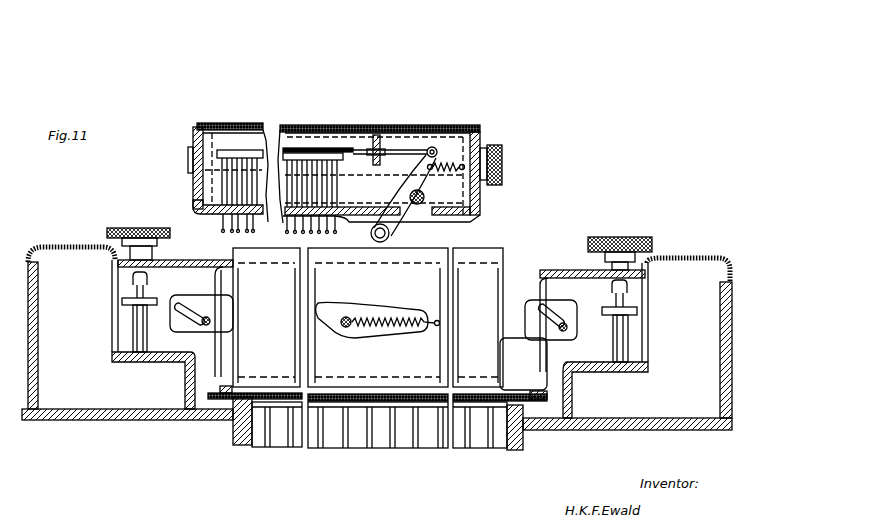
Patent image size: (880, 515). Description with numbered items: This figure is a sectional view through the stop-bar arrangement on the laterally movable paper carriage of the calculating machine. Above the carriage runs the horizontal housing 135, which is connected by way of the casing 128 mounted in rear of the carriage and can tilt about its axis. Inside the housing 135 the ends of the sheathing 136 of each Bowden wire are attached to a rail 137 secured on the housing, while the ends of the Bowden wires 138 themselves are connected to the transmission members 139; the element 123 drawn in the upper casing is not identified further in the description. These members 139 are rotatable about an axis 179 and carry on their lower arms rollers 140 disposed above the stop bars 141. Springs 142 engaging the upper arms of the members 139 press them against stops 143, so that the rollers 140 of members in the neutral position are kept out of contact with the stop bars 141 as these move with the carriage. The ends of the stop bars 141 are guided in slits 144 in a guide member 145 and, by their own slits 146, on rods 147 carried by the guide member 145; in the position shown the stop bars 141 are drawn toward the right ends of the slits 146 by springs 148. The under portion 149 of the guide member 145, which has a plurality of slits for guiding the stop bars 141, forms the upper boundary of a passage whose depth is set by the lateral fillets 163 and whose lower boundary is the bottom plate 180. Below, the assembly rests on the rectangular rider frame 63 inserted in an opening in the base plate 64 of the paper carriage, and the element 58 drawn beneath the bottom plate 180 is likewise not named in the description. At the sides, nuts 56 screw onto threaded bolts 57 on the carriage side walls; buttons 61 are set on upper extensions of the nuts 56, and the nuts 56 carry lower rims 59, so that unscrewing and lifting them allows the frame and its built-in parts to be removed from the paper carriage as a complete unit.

The housing 135 is at (196, 150).
The casing 128 is at (203, 215).
The type pins 123 is at (220, 148).
The sheathing 136 is at (325, 149).
The rail 137 is at (374, 136).
The Bowden wires 138 is at (405, 150).
The springs 142 is at (452, 166).
The transmission members 139 is at (427, 167).
The stops 143 is at (396, 212).
The axis 179 is at (424, 198).
The rollers 140 is at (390, 234).
The base plate 64 is at (110, 419).
The guide member 145 is at (193, 263).
The slits 144 is at (216, 369).
The buttons 61 is at (120, 230).
The nuts 56 is at (133, 284).
The lower rims 59 is at (123, 303).
The threaded bolts 57 is at (135, 328).
The slits 146 is at (201, 311).
The rods 147 is at (212, 322).
The lateral fillets 163 is at (224, 396).
The stop bars 141 is at (323, 258).
The springs 148 is at (369, 322).
The under portion 149 is at (508, 386).
The bottom plate 180 is at (330, 396).
The slats 58 is at (388, 428).
The rider frame 63 is at (514, 451).